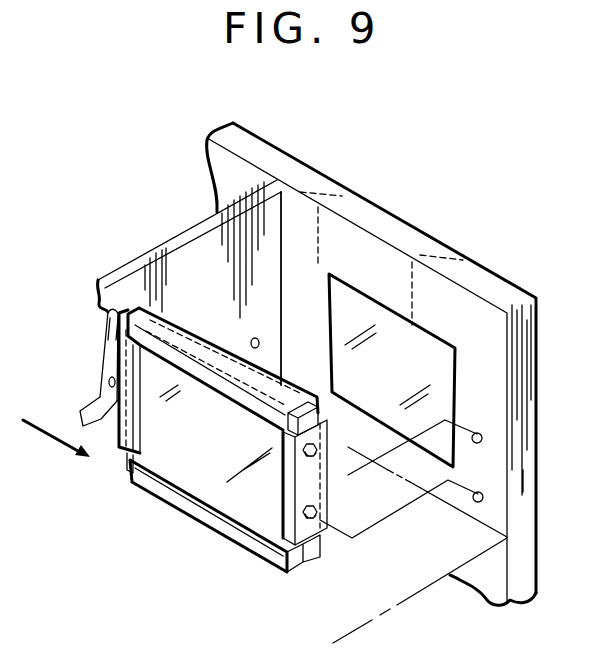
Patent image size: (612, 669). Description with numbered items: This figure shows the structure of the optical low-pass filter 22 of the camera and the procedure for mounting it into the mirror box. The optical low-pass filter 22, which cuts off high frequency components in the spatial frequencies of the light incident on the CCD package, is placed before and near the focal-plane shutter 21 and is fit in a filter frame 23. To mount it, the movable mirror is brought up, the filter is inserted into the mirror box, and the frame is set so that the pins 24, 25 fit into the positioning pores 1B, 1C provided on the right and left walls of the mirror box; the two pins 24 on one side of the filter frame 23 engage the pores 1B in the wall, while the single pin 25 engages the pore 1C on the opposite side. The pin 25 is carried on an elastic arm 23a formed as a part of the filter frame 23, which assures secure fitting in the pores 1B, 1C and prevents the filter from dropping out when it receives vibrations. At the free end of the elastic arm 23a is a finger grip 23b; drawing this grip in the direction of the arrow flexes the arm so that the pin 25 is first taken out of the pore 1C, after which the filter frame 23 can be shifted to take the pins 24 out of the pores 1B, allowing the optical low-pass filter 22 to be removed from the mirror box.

The focal-plane shutter 21 is at (497, 366).
The optical low-pass filter 22 is at (195, 478).
The filter frame 23 is at (235, 537).
The elastic arm 23a is at (110, 340).
The finger grip 23b is at (80, 412).
The pins 24 is at (316, 449).
The pin 25 is at (100, 373).
The positioning pores 1B is at (480, 433).
The positioning pore 1C is at (262, 343).